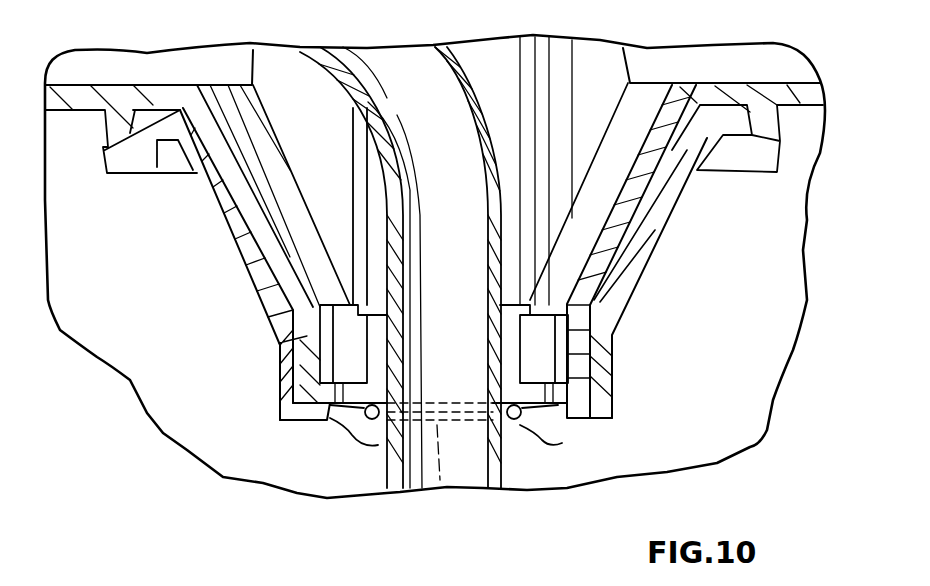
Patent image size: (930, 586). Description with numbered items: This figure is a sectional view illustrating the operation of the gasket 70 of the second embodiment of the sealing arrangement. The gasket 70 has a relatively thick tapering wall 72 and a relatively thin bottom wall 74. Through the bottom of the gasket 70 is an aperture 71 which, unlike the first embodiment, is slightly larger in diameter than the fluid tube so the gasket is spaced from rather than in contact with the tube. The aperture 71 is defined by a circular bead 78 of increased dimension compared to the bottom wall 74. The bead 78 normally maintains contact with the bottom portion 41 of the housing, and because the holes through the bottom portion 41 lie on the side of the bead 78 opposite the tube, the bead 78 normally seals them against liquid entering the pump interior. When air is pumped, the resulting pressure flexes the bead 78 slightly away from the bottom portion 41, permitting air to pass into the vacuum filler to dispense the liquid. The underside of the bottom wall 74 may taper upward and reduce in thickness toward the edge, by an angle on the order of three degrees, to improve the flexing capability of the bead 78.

The gasket 70 is at (232, 310).
The tapering wall 72 is at (630, 270).
The bottom portion 41 is at (283, 410).
The bottom wall 74 is at (330, 423).
The aperture 71 is at (437, 430).
The circular bead 78 is at (510, 430).